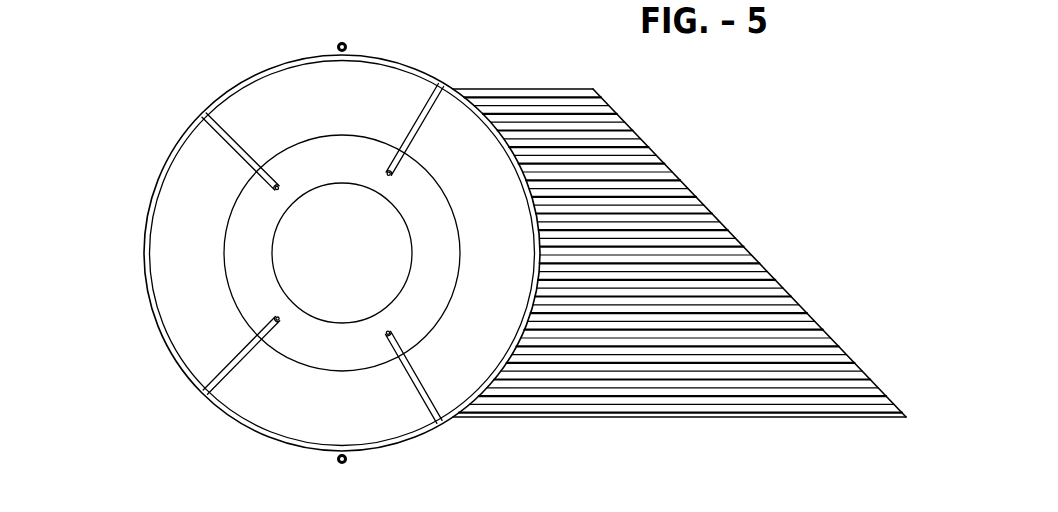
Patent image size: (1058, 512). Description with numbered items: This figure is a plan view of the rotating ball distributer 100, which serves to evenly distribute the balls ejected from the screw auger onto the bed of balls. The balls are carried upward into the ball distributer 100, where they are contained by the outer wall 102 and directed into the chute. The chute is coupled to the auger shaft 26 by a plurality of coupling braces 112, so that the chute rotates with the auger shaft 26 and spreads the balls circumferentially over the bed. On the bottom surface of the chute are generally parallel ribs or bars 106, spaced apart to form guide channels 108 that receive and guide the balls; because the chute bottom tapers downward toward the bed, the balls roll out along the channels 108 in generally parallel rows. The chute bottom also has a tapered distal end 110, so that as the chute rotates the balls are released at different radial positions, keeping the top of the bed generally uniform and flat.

The rotating ball distributer 100 is at (291, 248).
The outer wall 102 is at (248, 433).
The auger shaft 26 is at (248, 273).
The coupling braces 112 is at (412, 120).
The ribs or bars 106 is at (780, 312).
The guide channels 108 is at (748, 254).
The tapered distal end 110 is at (679, 252).